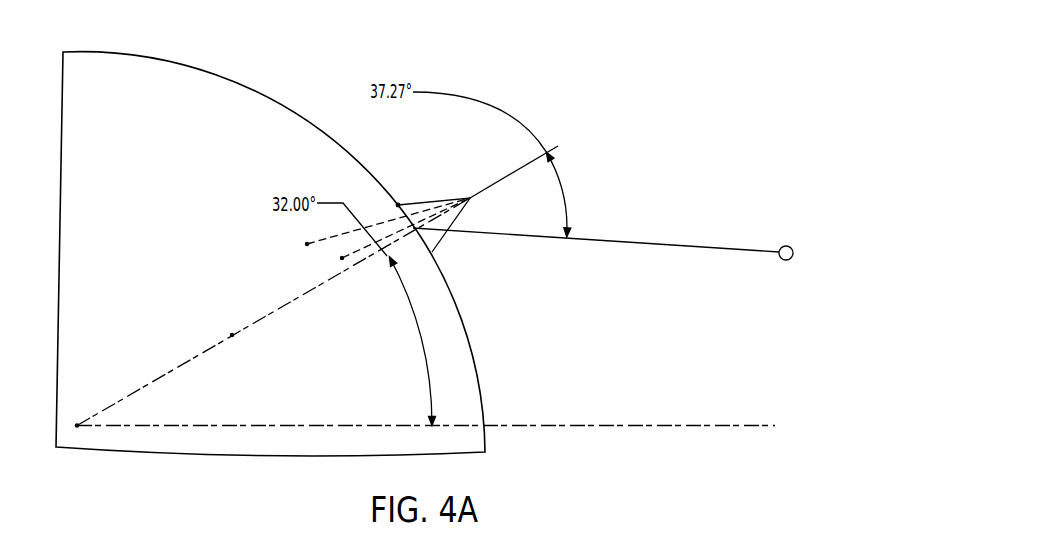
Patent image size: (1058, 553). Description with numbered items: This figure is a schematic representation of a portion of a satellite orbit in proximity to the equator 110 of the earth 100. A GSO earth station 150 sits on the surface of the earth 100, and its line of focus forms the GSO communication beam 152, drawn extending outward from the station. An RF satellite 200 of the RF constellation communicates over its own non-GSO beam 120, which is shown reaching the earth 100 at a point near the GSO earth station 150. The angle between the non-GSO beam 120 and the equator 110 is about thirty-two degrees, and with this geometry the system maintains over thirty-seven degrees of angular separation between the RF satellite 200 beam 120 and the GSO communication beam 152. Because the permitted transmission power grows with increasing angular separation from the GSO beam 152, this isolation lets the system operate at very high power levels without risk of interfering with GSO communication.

The earth 100 is at (158, 153).
The equator 110 is at (248, 424).
The non-GSO beam 120 is at (670, 244).
The GSO earth station 150 is at (440, 242).
The GSO communication beam 152 is at (505, 177).
The RF satellite 200 is at (784, 261).